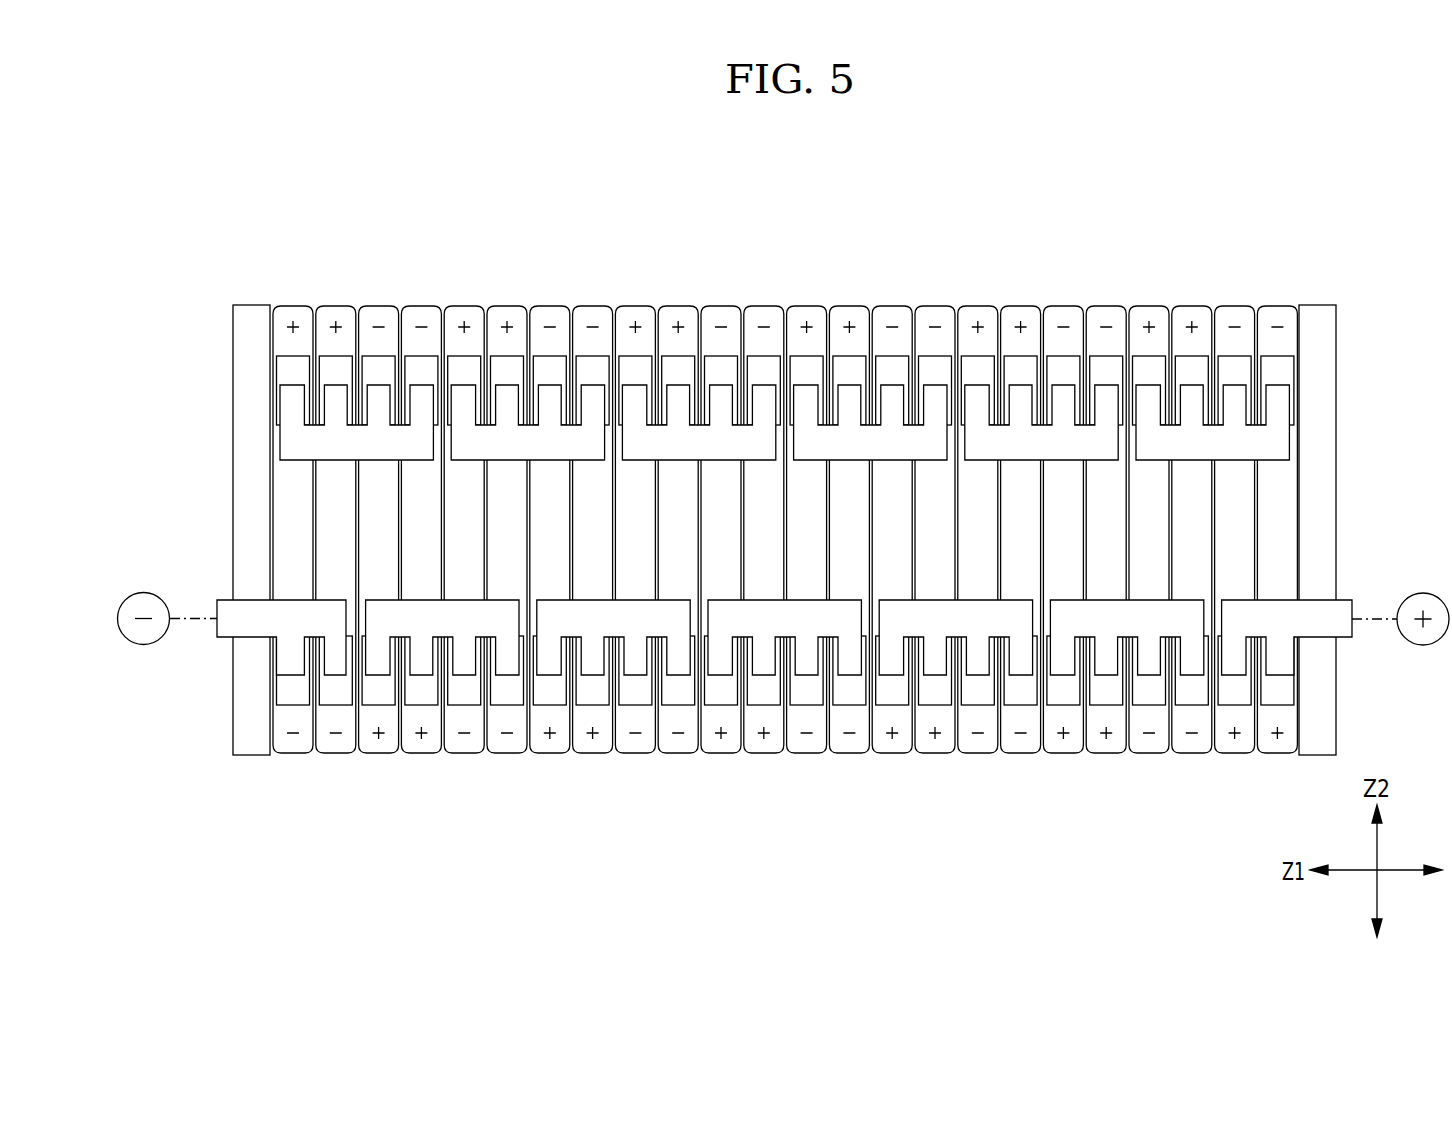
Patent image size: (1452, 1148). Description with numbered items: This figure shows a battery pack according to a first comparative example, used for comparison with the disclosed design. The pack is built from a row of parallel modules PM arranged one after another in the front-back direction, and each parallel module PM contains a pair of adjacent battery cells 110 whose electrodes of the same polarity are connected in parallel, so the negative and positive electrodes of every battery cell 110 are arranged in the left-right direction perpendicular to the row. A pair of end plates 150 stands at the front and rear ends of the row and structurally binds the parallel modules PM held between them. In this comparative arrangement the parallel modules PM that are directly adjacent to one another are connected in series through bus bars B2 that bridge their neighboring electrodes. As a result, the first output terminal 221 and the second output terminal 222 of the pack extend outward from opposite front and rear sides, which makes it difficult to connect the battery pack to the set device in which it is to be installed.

The end plate 150 is at (253, 320).
The bus bar B2 is at (863, 443).
The battery cell 110 is at (983, 747).
The parallel module PM is at (782, 776).
The first output terminal 221 is at (146, 592).
The second output terminal 222 is at (1424, 593).